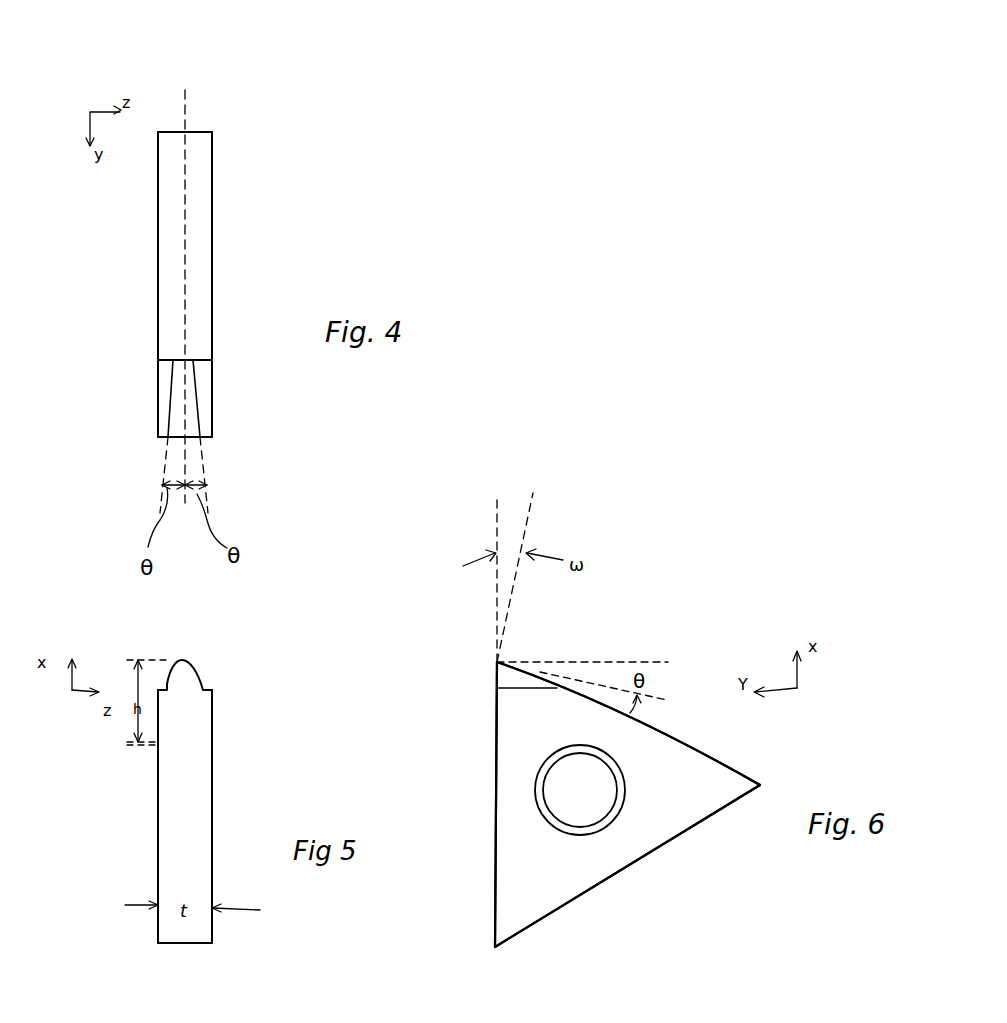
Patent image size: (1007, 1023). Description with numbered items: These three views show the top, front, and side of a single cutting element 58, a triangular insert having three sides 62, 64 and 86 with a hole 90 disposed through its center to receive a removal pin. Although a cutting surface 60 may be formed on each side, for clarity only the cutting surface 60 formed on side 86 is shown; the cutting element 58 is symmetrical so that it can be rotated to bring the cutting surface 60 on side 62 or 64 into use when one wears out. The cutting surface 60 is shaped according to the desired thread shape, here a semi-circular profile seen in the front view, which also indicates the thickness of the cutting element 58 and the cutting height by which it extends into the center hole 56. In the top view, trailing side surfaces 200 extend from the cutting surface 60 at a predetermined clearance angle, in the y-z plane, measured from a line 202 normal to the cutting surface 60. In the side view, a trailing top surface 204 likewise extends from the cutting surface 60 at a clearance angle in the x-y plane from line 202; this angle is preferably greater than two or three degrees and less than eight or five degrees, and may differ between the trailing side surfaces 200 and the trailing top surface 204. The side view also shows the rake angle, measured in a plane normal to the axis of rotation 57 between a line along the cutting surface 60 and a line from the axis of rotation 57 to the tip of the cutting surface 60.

In FIG. 5, the center hole 56 is at (127, 745).
In FIG. 6, the axis of rotation 57 is at (533, 495).
In FIG. 4, the cutting element 58 is at (218, 297).
In FIG. 5, the cutting element 58 is at (218, 753).
In FIG. 6, the cutting element 58 is at (688, 834).
In FIG. 4, the cutting surface 60 is at (190, 440).
In FIG. 5, the cutting surface 60 is at (188, 681).
In FIG. 6, the cutting surface 60 is at (495, 687).
In FIG. 6, the side 62 is at (623, 868).
In FIG. 4, the side 64 is at (197, 244).
In FIG. 6, the side 64 is at (665, 735).
In FIG. 4, the side 86 is at (212, 442).
In FIG. 5, the side 86 is at (192, 813).
In FIG. 6, the side 86 is at (497, 800).
In FIG. 6, the hole 90 is at (595, 805).
In FIG. 4, the trailing side surfaces 200 is at (158, 408).
In FIG. 4, the line normal to cutting surface 202 is at (183, 497).
In FIG. 6, the line normal to cutting surface 202 is at (636, 652).
In FIG. 6, the trailing top surface 204 is at (527, 663).